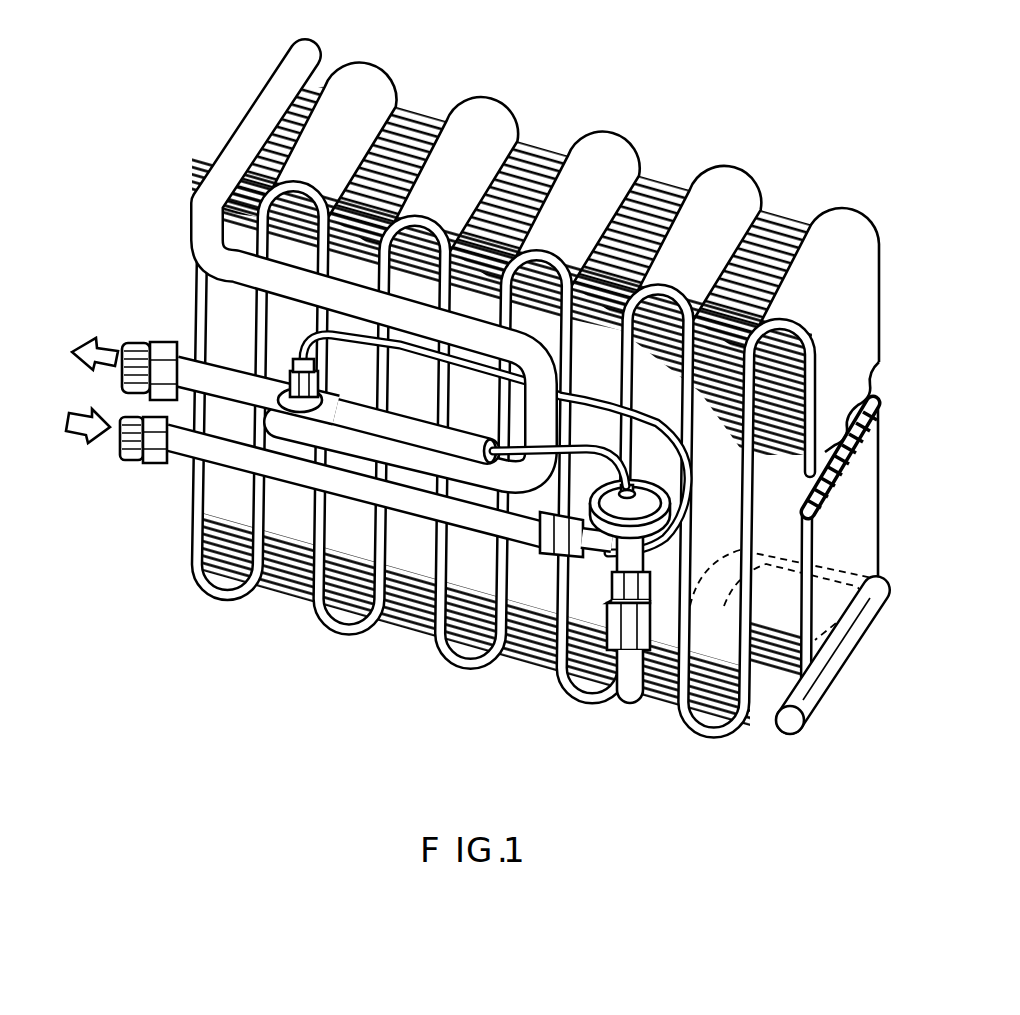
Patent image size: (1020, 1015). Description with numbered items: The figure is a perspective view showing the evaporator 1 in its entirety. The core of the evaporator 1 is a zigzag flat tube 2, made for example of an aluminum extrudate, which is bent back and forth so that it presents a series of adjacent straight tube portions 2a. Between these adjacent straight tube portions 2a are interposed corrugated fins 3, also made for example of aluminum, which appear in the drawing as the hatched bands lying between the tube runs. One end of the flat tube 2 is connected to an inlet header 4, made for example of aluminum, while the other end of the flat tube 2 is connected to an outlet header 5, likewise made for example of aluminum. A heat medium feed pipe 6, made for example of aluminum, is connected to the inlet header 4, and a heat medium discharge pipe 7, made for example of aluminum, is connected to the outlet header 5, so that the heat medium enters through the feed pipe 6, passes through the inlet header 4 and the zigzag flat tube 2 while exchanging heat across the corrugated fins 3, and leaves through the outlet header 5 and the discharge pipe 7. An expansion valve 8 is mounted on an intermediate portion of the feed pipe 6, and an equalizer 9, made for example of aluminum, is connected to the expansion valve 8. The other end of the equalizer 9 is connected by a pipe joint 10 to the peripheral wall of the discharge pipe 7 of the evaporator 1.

The evaporator 1 is at (649, 118).
The zigzag flat tube 2 is at (608, 126).
The straight tube portions 2a is at (253, 492).
The corrugated fins 3 is at (658, 177).
The inlet header 4 is at (830, 690).
The outlet header 5 is at (249, 100).
The heat medium feed pipe 6 is at (631, 700).
The heat medium discharge pipe 7 is at (213, 258).
The expansion valve 8 is at (673, 557).
The equalizer 9 is at (400, 350).
The pipe joint 10 is at (291, 362).